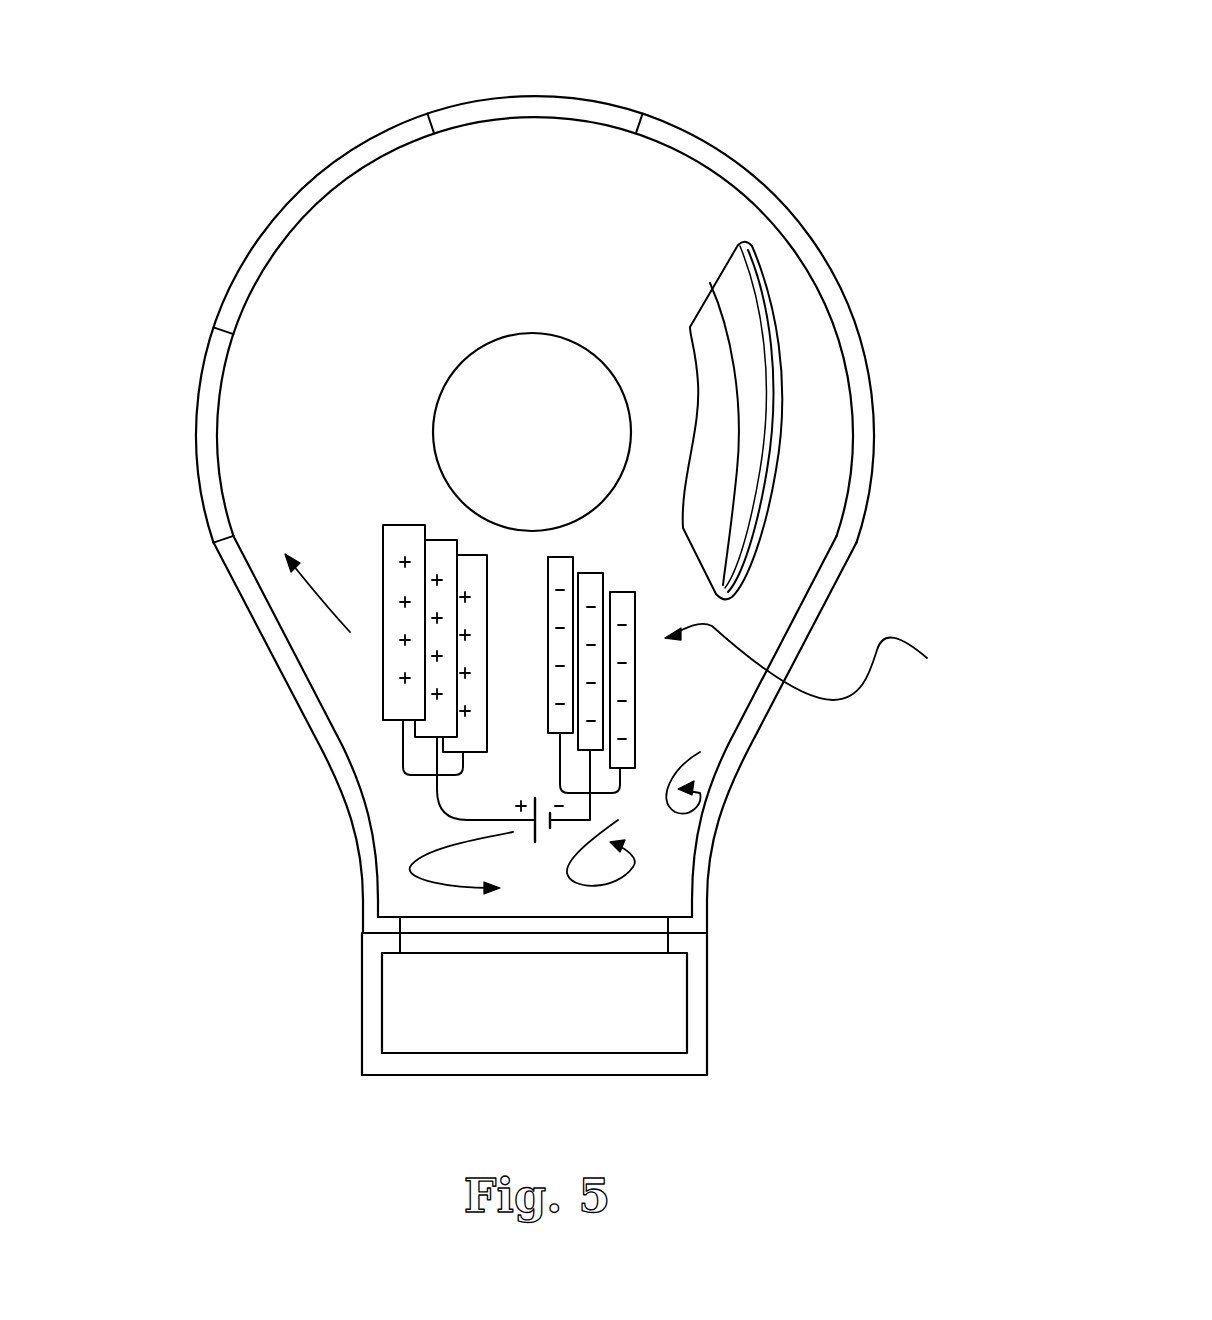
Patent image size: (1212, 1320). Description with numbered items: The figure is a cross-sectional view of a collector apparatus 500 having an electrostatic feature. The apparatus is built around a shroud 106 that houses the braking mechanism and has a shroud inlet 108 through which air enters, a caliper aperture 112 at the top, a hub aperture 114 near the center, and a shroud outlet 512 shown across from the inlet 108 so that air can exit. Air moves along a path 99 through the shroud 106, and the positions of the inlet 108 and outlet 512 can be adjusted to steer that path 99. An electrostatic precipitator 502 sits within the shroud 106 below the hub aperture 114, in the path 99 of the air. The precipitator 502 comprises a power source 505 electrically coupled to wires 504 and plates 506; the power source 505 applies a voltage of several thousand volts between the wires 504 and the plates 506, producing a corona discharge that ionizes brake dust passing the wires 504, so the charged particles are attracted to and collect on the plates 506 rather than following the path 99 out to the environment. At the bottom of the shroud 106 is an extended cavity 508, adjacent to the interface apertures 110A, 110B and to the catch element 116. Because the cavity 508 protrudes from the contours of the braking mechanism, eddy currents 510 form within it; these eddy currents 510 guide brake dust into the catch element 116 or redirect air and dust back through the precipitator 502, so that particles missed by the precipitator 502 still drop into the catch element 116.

The collector apparatus 500 is at (853, 66).
The shroud 106 is at (803, 236).
The shroud inlet 108 is at (753, 383).
The interface aperture 110A is at (638, 923).
The interface aperture 110B is at (650, 940).
The caliper aperture 112 is at (652, 97).
The hub aperture 114 is at (503, 353).
The catch element 116 is at (708, 1003).
The path of the air 99 is at (312, 620).
The electrostatic precipitator 502 is at (380, 513).
The wires 504 is at (567, 657).
The power source 505 is at (542, 797).
The plates 506 is at (467, 620).
The extended cavity 508 is at (297, 732).
The eddy currents 510 is at (707, 793).
The shroud outlet 512 is at (195, 325).